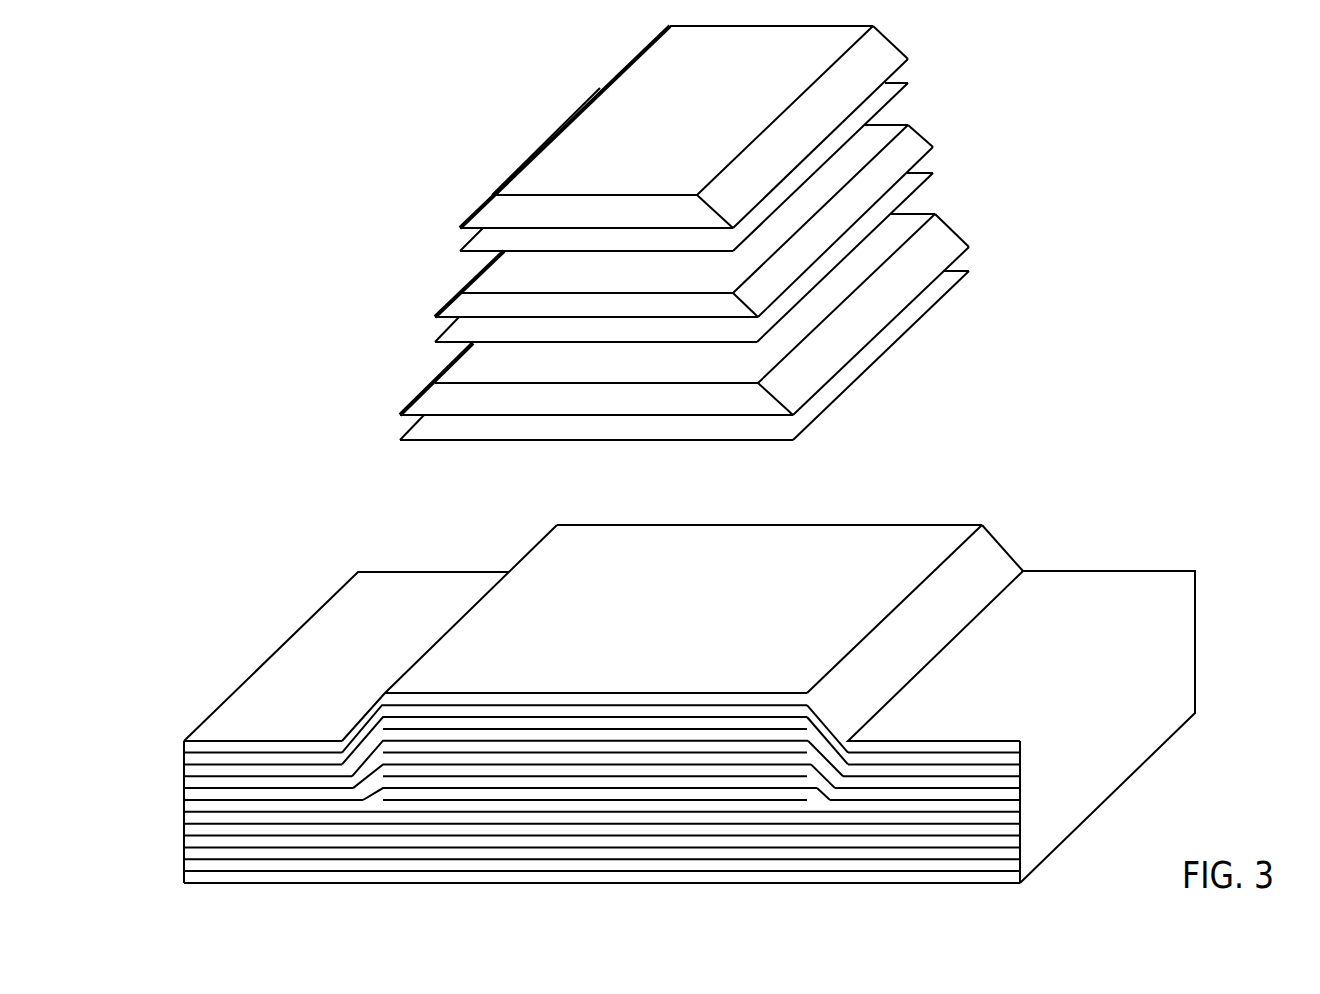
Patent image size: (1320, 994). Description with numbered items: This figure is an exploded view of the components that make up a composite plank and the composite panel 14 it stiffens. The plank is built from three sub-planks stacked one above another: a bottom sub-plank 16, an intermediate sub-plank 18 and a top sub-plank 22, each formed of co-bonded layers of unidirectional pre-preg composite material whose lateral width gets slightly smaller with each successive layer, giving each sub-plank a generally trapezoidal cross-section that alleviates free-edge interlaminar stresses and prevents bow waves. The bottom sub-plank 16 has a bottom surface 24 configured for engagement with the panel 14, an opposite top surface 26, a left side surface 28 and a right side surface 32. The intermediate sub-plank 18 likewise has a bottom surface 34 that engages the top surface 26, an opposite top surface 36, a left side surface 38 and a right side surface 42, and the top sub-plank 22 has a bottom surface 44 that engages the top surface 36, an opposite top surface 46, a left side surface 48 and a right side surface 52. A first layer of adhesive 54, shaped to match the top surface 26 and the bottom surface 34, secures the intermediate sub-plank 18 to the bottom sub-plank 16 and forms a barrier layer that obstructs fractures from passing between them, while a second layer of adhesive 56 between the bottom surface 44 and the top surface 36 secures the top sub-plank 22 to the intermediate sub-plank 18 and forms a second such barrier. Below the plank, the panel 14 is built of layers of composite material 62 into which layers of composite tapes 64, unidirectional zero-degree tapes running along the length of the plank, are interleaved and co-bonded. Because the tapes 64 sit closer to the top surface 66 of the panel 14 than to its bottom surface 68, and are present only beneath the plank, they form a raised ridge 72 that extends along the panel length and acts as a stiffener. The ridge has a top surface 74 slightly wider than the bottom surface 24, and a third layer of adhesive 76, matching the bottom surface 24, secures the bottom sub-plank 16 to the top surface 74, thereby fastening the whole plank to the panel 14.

The composite panel 14 is at (734, 710).
The bottom sub-plank 16 is at (649, 322).
The intermediate sub-plank 18 is at (665, 218).
The top sub-plank 22 is at (674, 122).
The bottom surface 24 is at (684, 376).
The top surface 26 is at (467, 375).
The left side surface 28 is at (398, 411).
The right side surface 32 is at (803, 372).
The bottom surface 34 is at (679, 258).
The top surface 36 is at (488, 290).
The left side surface 38 is at (440, 311).
The right side surface 42 is at (913, 148).
The bottom surface 44 is at (682, 169).
The top surface 46 is at (560, 158).
The left side surface 48 is at (492, 195).
The right side surface 52 is at (875, 52).
The first layer of adhesive 54 is at (900, 191).
The second layer of adhesive 56 is at (873, 98).
The layers of composite material 62 is at (1020, 741).
The layers of composite tapes 64 is at (800, 788).
The top surface 66 is at (1108, 585).
The bottom surface 68 is at (913, 878).
The raised ridge 72 is at (1003, 545).
The top surface of the ridge 74 is at (912, 535).
The third layer of adhesive 76 is at (923, 300).